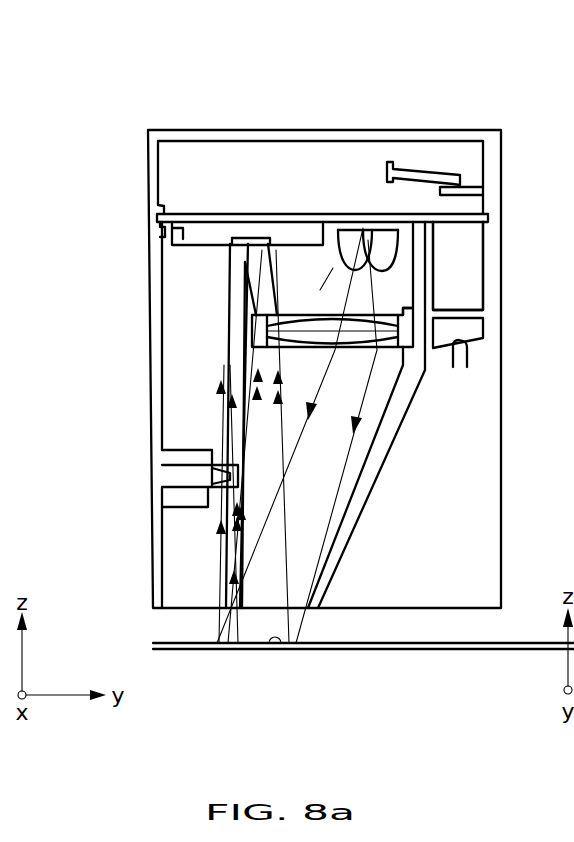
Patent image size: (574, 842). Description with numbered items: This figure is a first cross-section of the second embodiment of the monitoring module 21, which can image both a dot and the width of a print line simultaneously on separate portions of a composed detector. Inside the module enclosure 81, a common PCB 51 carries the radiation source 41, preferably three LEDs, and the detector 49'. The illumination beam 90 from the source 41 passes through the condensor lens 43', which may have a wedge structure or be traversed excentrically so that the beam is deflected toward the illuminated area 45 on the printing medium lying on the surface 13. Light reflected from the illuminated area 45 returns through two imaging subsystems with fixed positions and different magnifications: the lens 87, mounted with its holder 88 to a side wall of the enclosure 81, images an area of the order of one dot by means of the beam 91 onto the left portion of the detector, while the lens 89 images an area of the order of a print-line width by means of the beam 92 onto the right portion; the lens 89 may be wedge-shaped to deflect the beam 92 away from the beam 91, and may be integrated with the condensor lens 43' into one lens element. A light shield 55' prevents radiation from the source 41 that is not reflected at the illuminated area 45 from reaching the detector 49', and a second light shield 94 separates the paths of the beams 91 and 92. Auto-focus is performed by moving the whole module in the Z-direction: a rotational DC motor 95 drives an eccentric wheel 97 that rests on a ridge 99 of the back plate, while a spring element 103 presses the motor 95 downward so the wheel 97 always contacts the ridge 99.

The monitoring module 21 is at (141, 130).
The common PCB 51 is at (207, 214).
The light shield 55' is at (323, 184).
The radiation source 41 is at (368, 240).
The spring element 103 is at (413, 162).
The module enclosure 81 is at (470, 140).
The detector 49' is at (133, 242).
The rotational DC motor 95 is at (470, 252).
The eccentric wheel 97 is at (472, 328).
The ridge 99 is at (464, 357).
The second light shield 94 is at (267, 320).
The lens 89 is at (267, 343).
The beam 92 is at (262, 420).
The beam 91 is at (225, 432).
The holder 88 is at (182, 480).
The lens 87 is at (220, 505).
The condensor lens 43' is at (341, 435).
The illumination beam 90 is at (320, 490).
The conveyor plane 13 is at (186, 650).
The illuminated area 45 is at (284, 650).